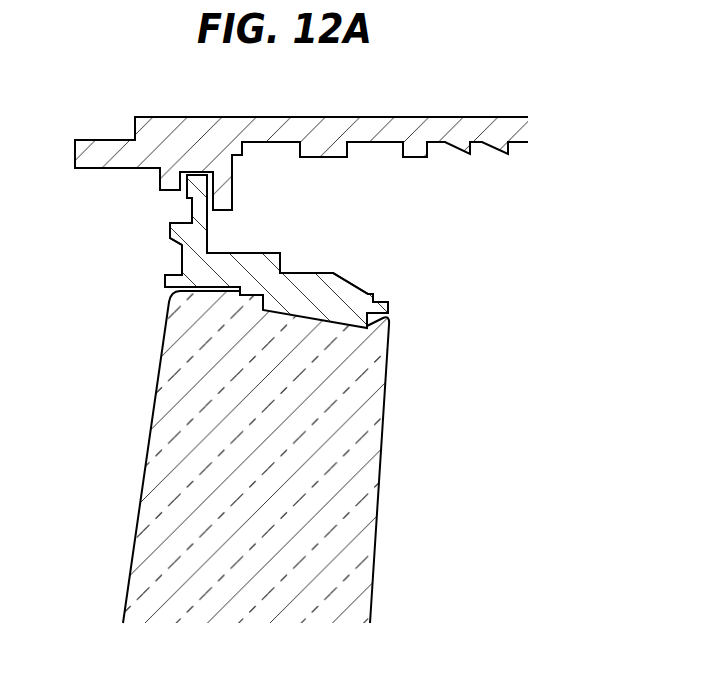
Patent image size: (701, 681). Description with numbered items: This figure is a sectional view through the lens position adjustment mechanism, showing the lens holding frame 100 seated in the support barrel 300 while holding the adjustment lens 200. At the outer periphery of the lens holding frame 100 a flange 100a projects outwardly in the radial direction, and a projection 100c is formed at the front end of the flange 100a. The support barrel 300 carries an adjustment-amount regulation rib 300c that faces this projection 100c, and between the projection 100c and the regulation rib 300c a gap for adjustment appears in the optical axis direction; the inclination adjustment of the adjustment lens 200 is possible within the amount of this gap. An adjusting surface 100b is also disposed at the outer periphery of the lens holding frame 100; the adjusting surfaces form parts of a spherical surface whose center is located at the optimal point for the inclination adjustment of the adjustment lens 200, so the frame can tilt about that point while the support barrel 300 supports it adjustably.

The support barrel 300 is at (266, 117).
The adjustment-amount regulation rib 300c is at (164, 180).
The lens holding frame 100 is at (350, 298).
The flange 100a is at (185, 214).
The adjusting surface 100b is at (342, 273).
The projection 100c is at (198, 187).
The adjustment lens 200 is at (153, 502).